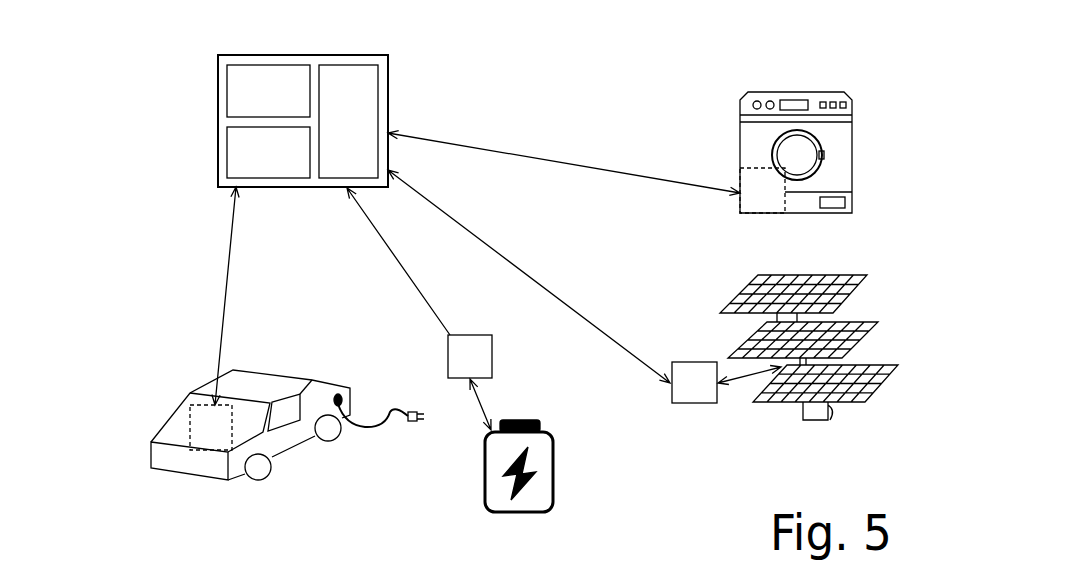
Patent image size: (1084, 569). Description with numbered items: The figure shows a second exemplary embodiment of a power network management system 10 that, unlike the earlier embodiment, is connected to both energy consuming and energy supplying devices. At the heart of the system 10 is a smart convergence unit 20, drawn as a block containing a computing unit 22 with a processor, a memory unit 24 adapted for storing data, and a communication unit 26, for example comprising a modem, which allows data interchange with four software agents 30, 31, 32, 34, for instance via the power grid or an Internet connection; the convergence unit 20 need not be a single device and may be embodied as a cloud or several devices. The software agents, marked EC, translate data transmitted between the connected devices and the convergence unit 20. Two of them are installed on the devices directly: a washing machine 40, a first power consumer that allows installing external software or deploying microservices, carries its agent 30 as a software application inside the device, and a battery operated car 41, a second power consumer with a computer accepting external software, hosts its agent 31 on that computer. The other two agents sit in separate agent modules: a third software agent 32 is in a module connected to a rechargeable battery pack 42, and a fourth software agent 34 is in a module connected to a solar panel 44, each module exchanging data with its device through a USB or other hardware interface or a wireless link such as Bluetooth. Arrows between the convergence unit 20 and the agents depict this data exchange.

The system 10 is at (555, 35).
The smart convergence unit 20 is at (339, 119).
The computing unit 22 is at (283, 105).
The memory unit 24 is at (283, 166).
The communication unit 26 is at (362, 136).
The software agent 30 is at (763, 213).
The software agent 31 is at (192, 452).
The third software agent 32 is at (480, 335).
The fourth software agent 34 is at (683, 403).
The washing machine 40 is at (792, 151).
The battery operated car 41 is at (260, 435).
The rechargeable battery pack 42 is at (563, 488).
The solar panel 44 is at (725, 290).